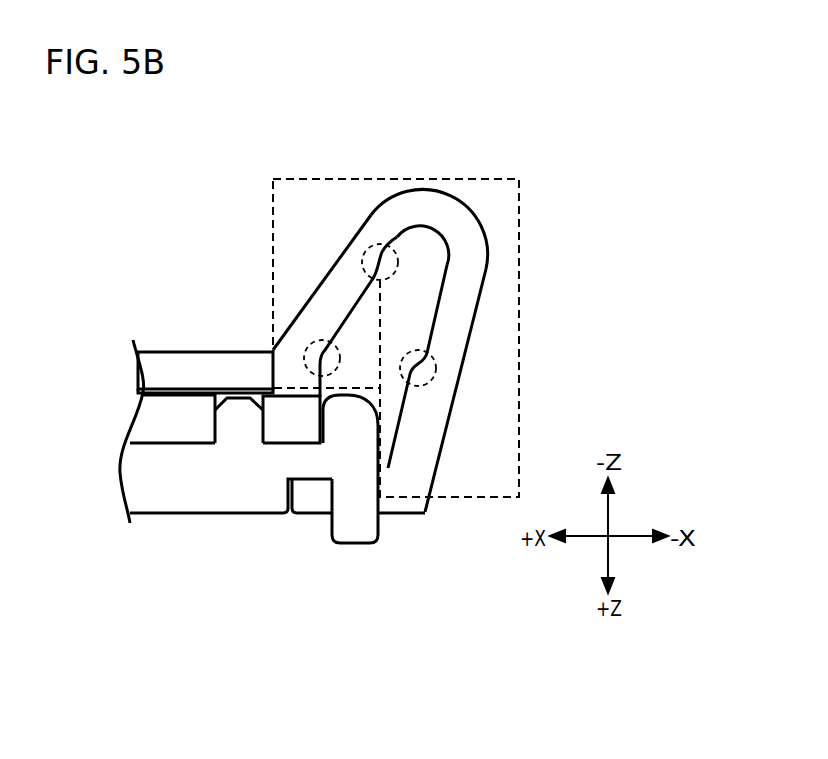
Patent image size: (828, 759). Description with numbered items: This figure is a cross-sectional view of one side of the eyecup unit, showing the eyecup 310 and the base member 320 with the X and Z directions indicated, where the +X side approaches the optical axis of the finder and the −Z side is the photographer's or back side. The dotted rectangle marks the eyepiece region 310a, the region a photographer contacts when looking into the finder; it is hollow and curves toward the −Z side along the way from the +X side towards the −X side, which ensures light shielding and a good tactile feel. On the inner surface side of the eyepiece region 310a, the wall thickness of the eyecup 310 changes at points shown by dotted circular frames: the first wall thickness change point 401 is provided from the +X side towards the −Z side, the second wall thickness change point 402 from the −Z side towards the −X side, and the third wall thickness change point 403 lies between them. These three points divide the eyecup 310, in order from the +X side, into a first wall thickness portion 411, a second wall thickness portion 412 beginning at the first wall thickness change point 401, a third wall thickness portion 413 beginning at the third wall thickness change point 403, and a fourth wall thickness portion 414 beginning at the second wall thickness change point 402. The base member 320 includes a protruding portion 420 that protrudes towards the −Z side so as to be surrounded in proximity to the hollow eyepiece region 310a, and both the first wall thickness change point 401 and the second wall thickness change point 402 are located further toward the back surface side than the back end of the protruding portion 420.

The eyecup 310 is at (399, 321).
The eyepiece region 310a is at (498, 179).
The base member 320 is at (232, 498).
The first wall thickness change point 401 is at (318, 345).
The second wall thickness change point 402 is at (420, 370).
The third wall thickness change point 403 is at (374, 246).
The first wall thickness portion 411 is at (302, 405).
The second wall thickness portion 412 is at (330, 297).
The third wall thickness portion 413 is at (467, 257).
The fourth wall thickness portion 414 is at (433, 417).
The protruding portion 420 is at (348, 417).